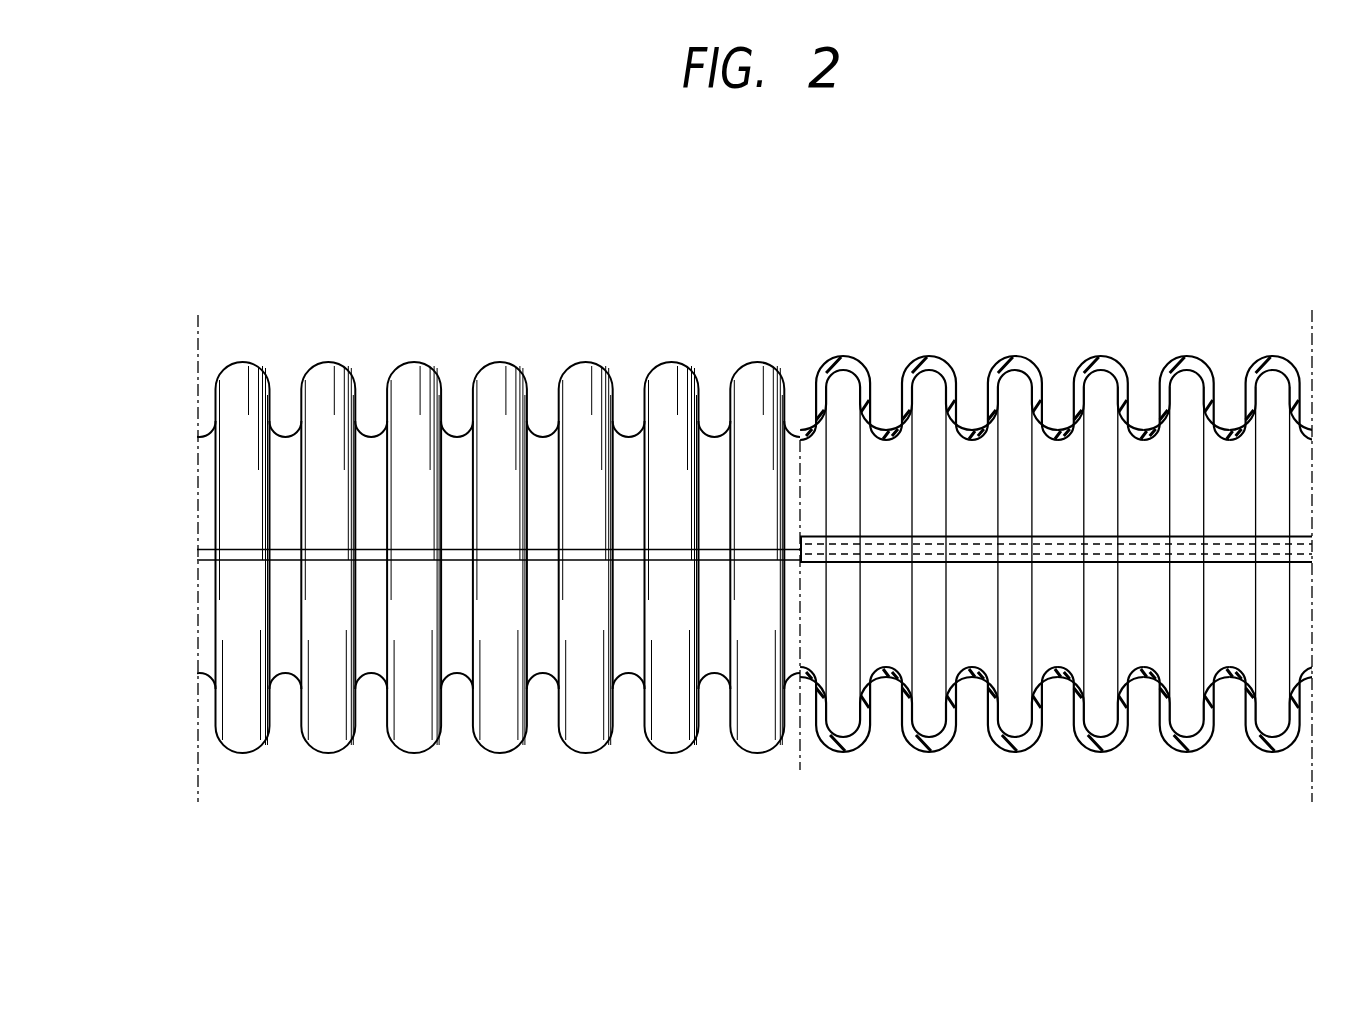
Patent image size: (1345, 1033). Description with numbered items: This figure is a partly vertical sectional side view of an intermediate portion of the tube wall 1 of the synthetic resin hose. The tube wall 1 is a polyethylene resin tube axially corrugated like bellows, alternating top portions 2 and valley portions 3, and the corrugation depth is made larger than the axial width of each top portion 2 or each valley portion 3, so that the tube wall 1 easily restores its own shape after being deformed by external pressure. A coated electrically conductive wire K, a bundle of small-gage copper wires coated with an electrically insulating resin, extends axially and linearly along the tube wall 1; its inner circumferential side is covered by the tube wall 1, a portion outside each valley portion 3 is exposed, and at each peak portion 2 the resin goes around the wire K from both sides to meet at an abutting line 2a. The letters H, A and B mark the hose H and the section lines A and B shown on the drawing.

The tube wall 1 is at (772, 219).
The top portion 2 is at (670, 360).
The abutting line 2a is at (490, 558).
The valley portion 3 is at (801, 437).
The coated electrically conductive wire K is at (368, 558).
The tube wall / height H is at (1220, 332).
The section line A- A is at (887, 762).
The section line B- B is at (1018, 350).